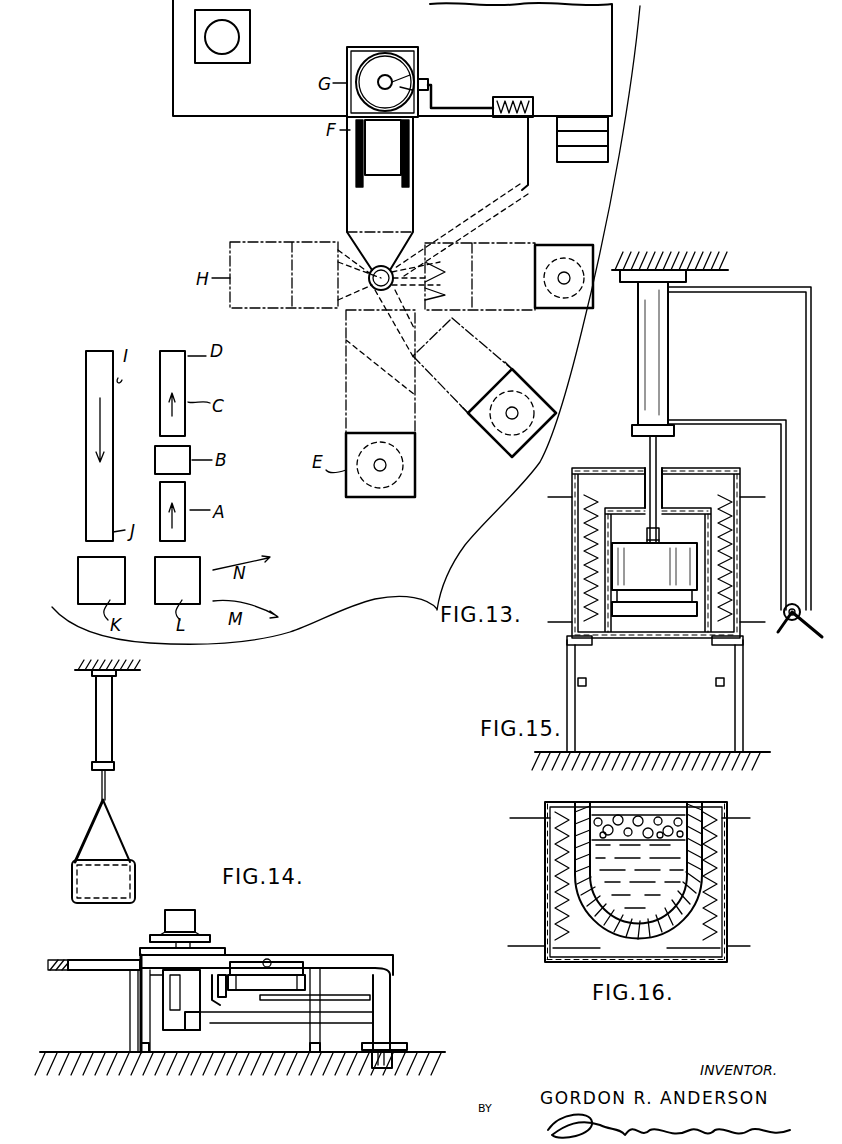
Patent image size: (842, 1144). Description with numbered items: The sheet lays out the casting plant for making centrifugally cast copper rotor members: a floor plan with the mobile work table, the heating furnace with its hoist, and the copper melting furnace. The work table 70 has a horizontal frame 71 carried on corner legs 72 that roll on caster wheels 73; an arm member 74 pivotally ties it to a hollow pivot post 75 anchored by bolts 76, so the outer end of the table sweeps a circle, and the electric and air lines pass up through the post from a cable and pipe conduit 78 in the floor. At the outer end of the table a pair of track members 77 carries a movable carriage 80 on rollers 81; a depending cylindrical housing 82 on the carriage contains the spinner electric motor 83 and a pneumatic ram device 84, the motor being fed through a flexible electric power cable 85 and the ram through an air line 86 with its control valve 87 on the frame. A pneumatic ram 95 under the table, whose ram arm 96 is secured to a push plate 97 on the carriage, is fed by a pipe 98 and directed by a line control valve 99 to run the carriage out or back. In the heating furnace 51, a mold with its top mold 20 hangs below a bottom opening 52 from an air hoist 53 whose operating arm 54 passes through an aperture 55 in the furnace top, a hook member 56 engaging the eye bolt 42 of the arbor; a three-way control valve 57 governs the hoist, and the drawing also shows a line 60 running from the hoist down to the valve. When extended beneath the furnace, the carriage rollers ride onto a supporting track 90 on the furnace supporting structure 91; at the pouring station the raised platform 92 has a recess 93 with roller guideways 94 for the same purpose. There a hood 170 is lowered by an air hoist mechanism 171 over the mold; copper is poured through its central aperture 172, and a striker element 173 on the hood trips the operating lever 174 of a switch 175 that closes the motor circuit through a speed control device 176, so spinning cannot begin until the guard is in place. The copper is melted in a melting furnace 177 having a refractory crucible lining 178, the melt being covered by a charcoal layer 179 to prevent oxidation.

In FIG. 15, the top mold 20 is at (654, 580).
In FIG. 15, the eye bolt 42 is at (645, 535).
In FIG. 15, the heating furnace 51 is at (566, 559).
In FIG. 15, the bottom opening 52 is at (615, 634).
In FIG. 15, the air hoist 53 is at (662, 360).
In FIG. 15, the operating arm 54 is at (658, 465).
In FIG. 15, the aperture 55 is at (648, 470).
In FIG. 15, the hook member 56 is at (658, 537).
In FIG. 15, the three-way control valve 57 is at (797, 625).
In FIG. 15, the fluid line 60 is at (780, 420).
In FIG. 13, the work table 70 is at (418, 200).
In FIG. 14, the work table 70 is at (268, 936).
In FIG. 14, the frame 71 is at (298, 962).
In FIG. 14, the corner legs 72 is at (150, 1035).
In FIG. 14, the caster wheels 73 is at (145, 1052).
In FIG. 13, the arm member 74 is at (400, 247).
In FIG. 14, the arm member 74 is at (345, 955).
In FIG. 13, the pivot post 75 is at (369, 278).
In FIG. 14, the pivot post 75 is at (393, 990).
In FIG. 14, the bolts 76 is at (405, 1043).
In FIG. 13, the track members 77 is at (356, 172).
In FIG. 14, the track members 77 is at (128, 975).
In FIG. 13, the cable and pipe conduit 78 is at (461, 227).
In FIG. 14, the cable and pipe conduit 78 is at (390, 1068).
In FIG. 14, the movable carriage 80 is at (150, 950).
In FIG. 14, the rollers 81 is at (140, 955).
In FIG. 14, the cylindrical housing 82 is at (163, 998).
In FIG. 14, the electric motor 83 is at (193, 1030).
In FIG. 14, the pneumatic ram device 84 is at (178, 1002).
In FIG. 13, the flexible electric power cable 85 is at (530, 185).
In FIG. 14, the flexible electric power cable 85 is at (235, 1023).
In FIG. 14, the air line 86 is at (252, 1022).
In FIG. 14, the control valve 87 is at (215, 952).
In FIG. 15, the supporting track 90 is at (588, 682).
In FIG. 15, the furnace supporting structure 91 is at (575, 725).
In FIG. 13, the raised platform 92 is at (489, 48).
In FIG. 14, the raised platform 92 is at (52, 958).
In FIG. 14, the recess 93 is at (80, 972).
In FIG. 14, the roller guideways 94 is at (84, 960).
In FIG. 14, the pneumatic ram 95 is at (262, 990).
In FIG. 14, the ram arm 96 is at (226, 988).
In FIG. 14, the push plate 97 is at (216, 998).
In FIG. 14, the pipe 98 is at (336, 996).
In FIG. 14, the line control valve 99 is at (266, 958).
In FIG. 13, the hood 170 is at (392, 60).
In FIG. 14, the hood 170 is at (125, 878).
In FIG. 14, the air hoist mechanism 171 is at (108, 716).
In FIG. 13, the central aperture 172 is at (392, 80).
In FIG. 14, the central aperture 172 is at (106, 862).
In FIG. 13, the striker element 173 is at (410, 75).
In FIG. 13, the operating lever 174 is at (412, 84).
In FIG. 13, the switch 175 is at (428, 84).
In FIG. 13, the speed control device 176 is at (533, 100).
In FIG. 13, the melting furnace 177 is at (210, 37).
In FIG. 16, the melting furnace 177 is at (540, 883).
In FIG. 16, the crucible lining 178 is at (590, 806).
In FIG. 16, the charcoal layer 179 is at (650, 822).